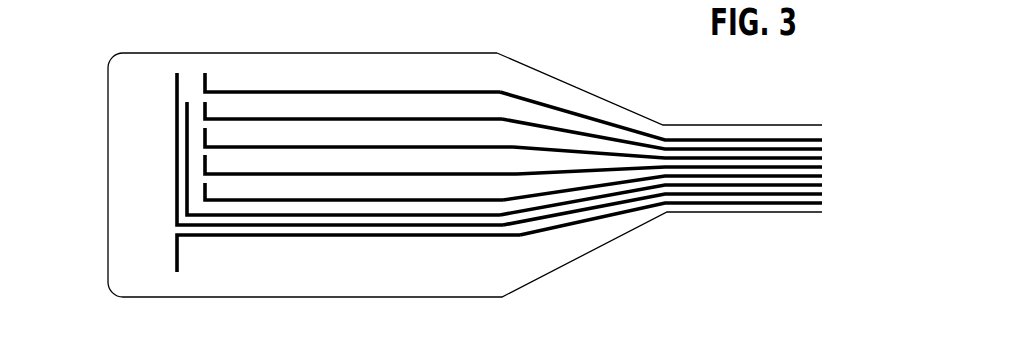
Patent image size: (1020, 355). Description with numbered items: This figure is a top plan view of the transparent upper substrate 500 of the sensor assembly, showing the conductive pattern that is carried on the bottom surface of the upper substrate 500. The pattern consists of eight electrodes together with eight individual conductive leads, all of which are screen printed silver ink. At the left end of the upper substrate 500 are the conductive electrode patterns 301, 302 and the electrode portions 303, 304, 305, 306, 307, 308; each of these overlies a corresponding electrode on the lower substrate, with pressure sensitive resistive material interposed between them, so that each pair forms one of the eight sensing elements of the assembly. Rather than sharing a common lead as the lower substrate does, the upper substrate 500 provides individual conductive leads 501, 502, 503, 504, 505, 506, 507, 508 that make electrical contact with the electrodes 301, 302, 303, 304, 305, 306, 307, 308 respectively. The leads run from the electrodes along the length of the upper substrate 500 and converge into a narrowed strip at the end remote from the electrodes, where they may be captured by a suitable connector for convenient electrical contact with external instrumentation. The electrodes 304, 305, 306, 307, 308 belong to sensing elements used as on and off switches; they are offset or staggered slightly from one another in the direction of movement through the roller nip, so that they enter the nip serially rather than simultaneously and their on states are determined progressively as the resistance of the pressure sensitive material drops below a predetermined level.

The conductive electrode pattern 301 is at (177, 260).
The conductive electrode pattern 302 is at (190, 105).
The electrode portion 303 is at (177, 83).
The electrode 304 is at (207, 192).
The electrode 305 is at (207, 158).
The electrode 306 is at (207, 128).
The electrode 307 is at (207, 110).
The electrode 308 is at (216, 78).
The upper substrate 500 is at (555, 83).
The conductive lead 501 is at (620, 213).
The conductive lead 502 is at (697, 197).
The conductive lead 503 is at (745, 190).
The conductive lead 504 is at (787, 178).
The conductive lead 505 is at (762, 165).
The conductive lead 506 is at (736, 156).
The conductive lead 507 is at (692, 146).
The conductive lead 508 is at (661, 138).